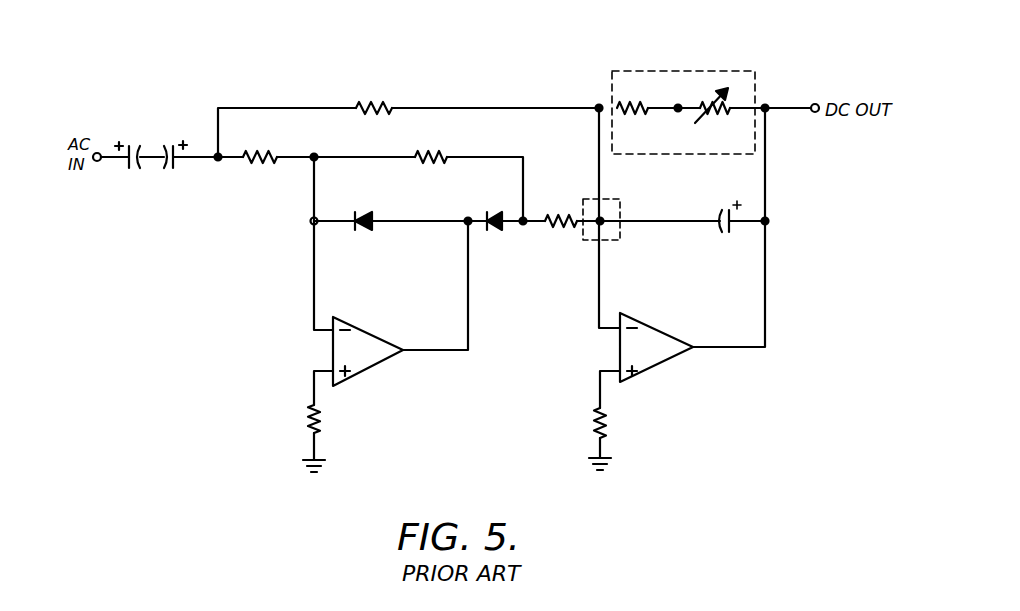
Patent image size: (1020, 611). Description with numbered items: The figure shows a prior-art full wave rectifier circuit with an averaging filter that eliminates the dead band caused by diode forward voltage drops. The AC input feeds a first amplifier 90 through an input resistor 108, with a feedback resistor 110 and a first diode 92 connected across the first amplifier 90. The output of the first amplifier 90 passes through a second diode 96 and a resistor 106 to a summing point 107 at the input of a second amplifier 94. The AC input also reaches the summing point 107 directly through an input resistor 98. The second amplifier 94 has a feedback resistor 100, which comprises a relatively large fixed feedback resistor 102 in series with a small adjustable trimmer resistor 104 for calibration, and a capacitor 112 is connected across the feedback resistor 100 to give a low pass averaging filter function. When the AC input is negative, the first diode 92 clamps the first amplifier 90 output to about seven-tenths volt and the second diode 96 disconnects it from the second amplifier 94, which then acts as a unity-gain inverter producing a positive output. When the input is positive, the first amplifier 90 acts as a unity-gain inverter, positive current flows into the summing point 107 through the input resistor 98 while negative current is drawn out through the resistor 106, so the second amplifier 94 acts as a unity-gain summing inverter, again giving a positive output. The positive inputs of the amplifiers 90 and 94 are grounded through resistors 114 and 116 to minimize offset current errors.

The first amplifier 90 is at (378, 334).
The first diode 92 is at (360, 215).
The second amplifier 94 is at (660, 331).
The second diode 96 is at (497, 213).
The input resistor 98 is at (372, 104).
The feedback resistor 100 is at (610, 70).
The fixed feedback resistor 102 is at (630, 103).
The trimmer resistor 104 is at (700, 91).
The resistor 106 is at (553, 229).
The summing point 107 is at (618, 241).
The input resistor 108 is at (268, 150).
The feedback resistor 110 is at (433, 152).
The capacitor 112 is at (718, 215).
The resistor 114 is at (310, 407).
The resistor 116 is at (596, 410).